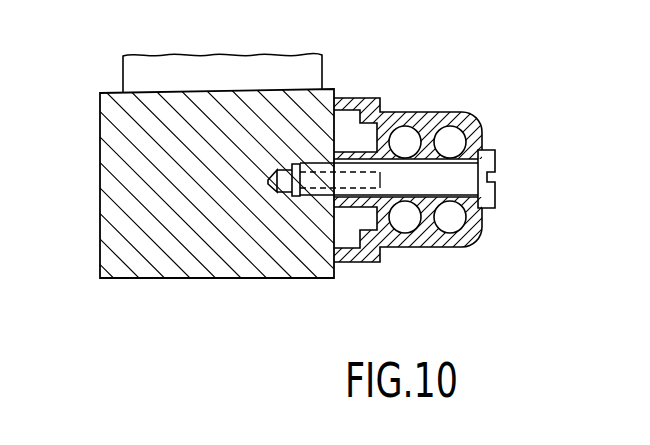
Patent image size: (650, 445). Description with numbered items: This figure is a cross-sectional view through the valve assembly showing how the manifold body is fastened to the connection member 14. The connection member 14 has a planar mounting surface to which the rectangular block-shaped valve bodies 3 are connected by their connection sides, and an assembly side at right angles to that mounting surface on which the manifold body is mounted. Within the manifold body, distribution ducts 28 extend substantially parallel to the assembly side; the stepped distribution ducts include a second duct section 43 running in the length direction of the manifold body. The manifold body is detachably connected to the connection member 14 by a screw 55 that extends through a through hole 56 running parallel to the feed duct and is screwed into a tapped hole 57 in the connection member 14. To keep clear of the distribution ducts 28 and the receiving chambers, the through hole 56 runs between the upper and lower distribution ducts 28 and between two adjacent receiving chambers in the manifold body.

The valve body 3 is at (133, 78).
The connection member 14 is at (148, 257).
The distribution duct 28 is at (401, 140).
The second duct section 43 is at (448, 138).
The screw 55 is at (498, 198).
The through hole 56 is at (475, 128).
The tapped hole 57 is at (296, 193).